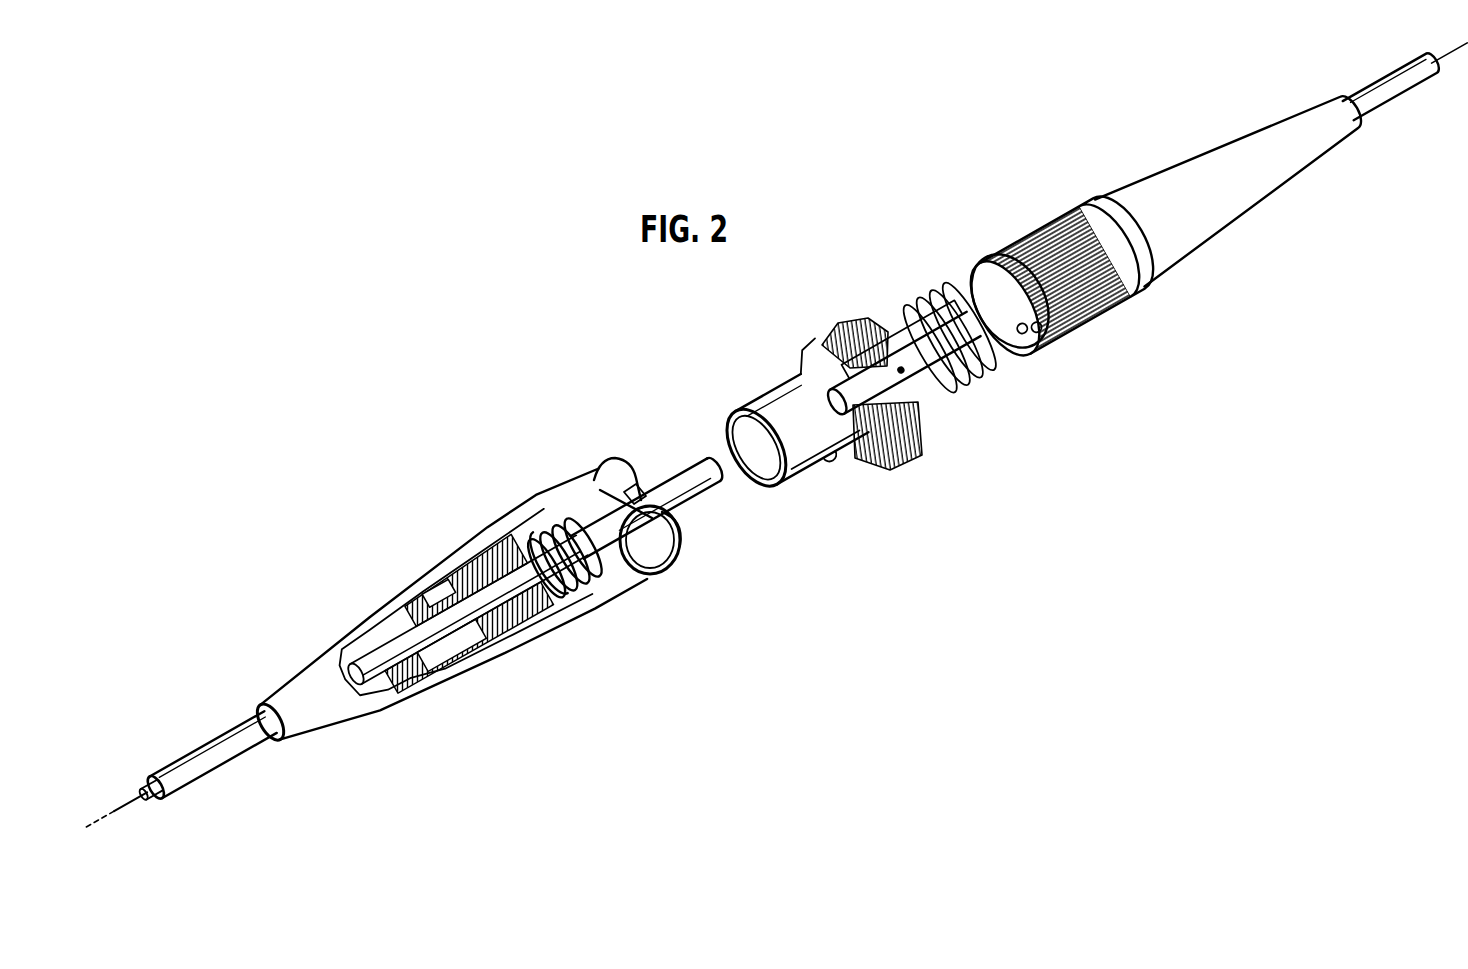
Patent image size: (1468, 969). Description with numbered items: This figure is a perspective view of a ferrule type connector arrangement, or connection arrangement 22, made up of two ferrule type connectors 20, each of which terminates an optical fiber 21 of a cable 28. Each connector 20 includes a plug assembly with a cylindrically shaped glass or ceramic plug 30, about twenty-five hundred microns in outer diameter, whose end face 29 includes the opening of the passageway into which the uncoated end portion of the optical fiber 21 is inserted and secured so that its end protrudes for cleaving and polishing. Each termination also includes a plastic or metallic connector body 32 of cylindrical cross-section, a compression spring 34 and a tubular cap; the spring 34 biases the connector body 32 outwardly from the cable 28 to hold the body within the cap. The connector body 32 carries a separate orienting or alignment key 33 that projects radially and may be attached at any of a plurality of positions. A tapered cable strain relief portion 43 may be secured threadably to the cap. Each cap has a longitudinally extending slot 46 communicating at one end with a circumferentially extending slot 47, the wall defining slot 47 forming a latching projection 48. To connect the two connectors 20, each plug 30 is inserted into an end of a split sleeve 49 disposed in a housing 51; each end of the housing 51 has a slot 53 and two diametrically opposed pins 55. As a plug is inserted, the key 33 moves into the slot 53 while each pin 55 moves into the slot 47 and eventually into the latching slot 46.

The ferrule type connector 20 is at (446, 526).
The optical fiber 21 is at (141, 808).
The connection arrangement 22 is at (939, 643).
The cable 28 is at (224, 742).
The end face 29 is at (722, 474).
The plug 30 is at (689, 470).
The connector body 32 is at (647, 482).
The alignment key 33 is at (635, 474).
The compression spring 34 is at (598, 597).
The cable strain relief portion 43 is at (1330, 100).
The longitudinally extending slot 46 is at (590, 497).
The circumferentially extending slot 47 is at (640, 568).
The latching projection 48 is at (680, 528).
The split sleeve 49 is at (935, 380).
The housing 51 is at (811, 480).
The slot 53 is at (777, 397).
The pin 55 is at (829, 460).